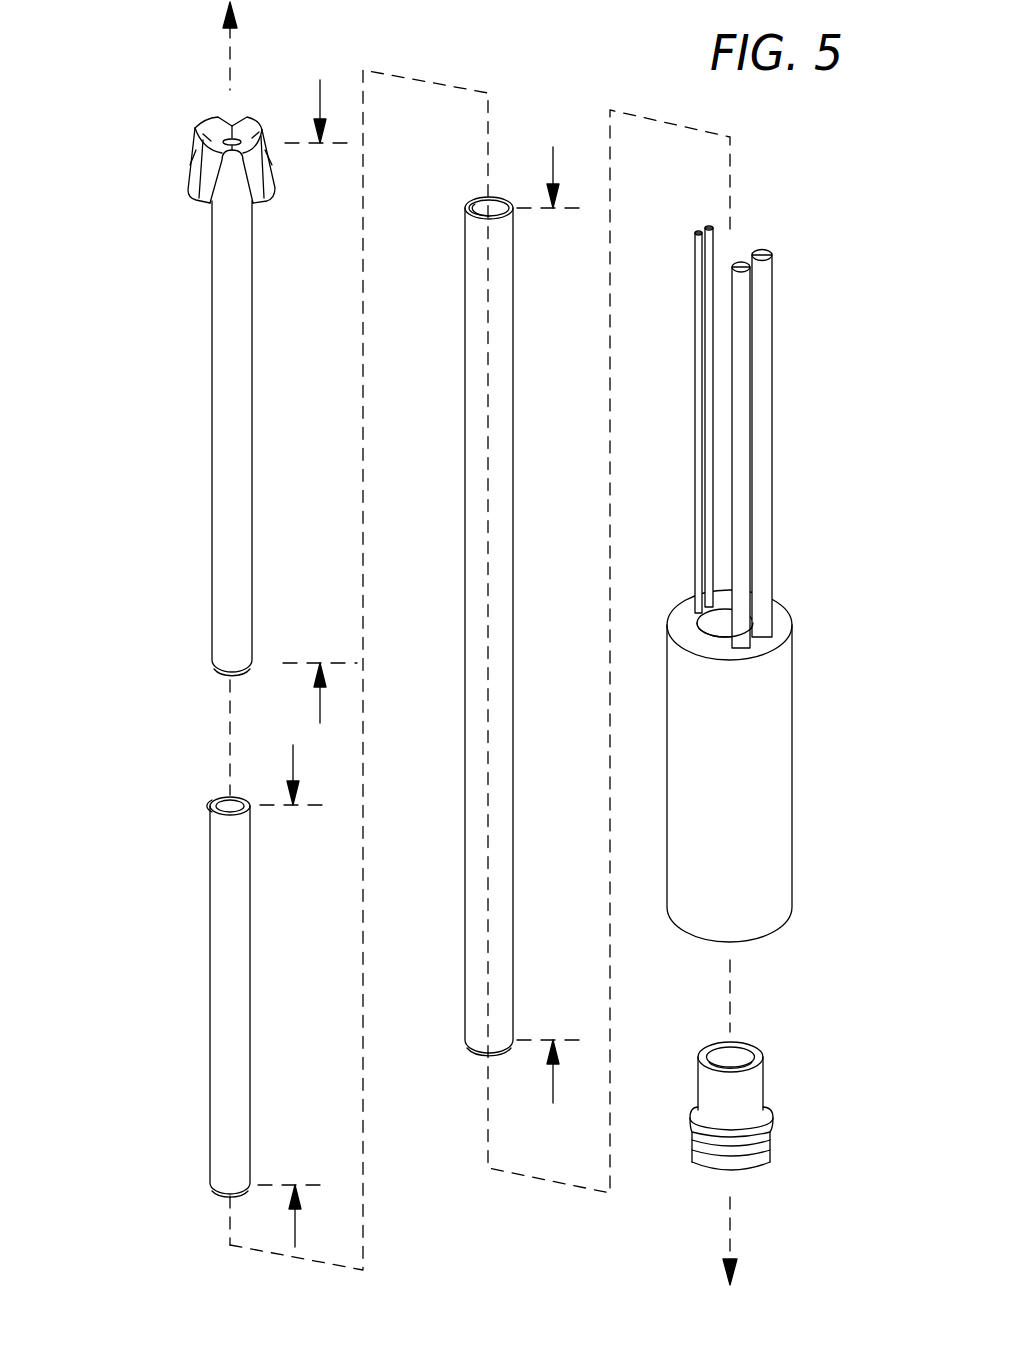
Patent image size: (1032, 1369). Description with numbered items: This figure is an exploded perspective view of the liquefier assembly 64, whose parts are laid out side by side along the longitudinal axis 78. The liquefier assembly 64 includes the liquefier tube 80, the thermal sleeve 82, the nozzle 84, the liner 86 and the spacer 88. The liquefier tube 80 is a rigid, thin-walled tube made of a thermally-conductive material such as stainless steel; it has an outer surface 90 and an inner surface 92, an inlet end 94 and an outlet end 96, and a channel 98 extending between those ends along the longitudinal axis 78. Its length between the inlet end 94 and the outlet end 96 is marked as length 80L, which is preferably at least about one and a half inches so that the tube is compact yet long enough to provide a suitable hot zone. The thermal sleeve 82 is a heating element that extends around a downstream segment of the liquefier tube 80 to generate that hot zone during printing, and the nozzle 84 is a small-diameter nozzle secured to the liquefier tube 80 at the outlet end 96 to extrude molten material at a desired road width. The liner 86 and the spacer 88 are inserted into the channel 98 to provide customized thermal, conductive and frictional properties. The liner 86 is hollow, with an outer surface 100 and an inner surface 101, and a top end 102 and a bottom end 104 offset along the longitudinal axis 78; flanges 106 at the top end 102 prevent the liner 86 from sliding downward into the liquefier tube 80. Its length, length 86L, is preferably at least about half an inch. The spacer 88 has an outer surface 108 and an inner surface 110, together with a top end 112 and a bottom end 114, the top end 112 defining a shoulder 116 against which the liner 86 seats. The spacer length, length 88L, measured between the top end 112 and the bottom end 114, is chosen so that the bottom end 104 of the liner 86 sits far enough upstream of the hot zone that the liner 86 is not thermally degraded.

The liquefier assembly 64 is at (792, 121).
The longitudinal axis 78 is at (228, 55).
The liquefier tube 80 is at (481, 615).
The length of liquefier tube 80L is at (552, 160).
The thermal sleeve 82 is at (775, 747).
The nozzle 84 is at (760, 1090).
The liner 86 is at (181, 457).
The length of liner 86L is at (318, 700).
The spacer 88 is at (161, 973).
The length of spacer 88L is at (294, 755).
The outer surface 90 is at (475, 513).
The inner surface 92 is at (473, 210).
The inlet end 94 is at (535, 227).
The outlet end 96 is at (468, 1066).
The channel 98 is at (482, 190).
The outer surface 100 is at (222, 503).
The inner surface 101 is at (233, 135).
The top end 102 is at (199, 135).
The bottom end 104 is at (200, 675).
The flanges 106 is at (197, 177).
The outer surface 108 is at (225, 1060).
The inner surface 110 is at (227, 802).
The top end 112 is at (190, 823).
The bottom end 114 is at (190, 1188).
The shoulder 116 is at (217, 807).